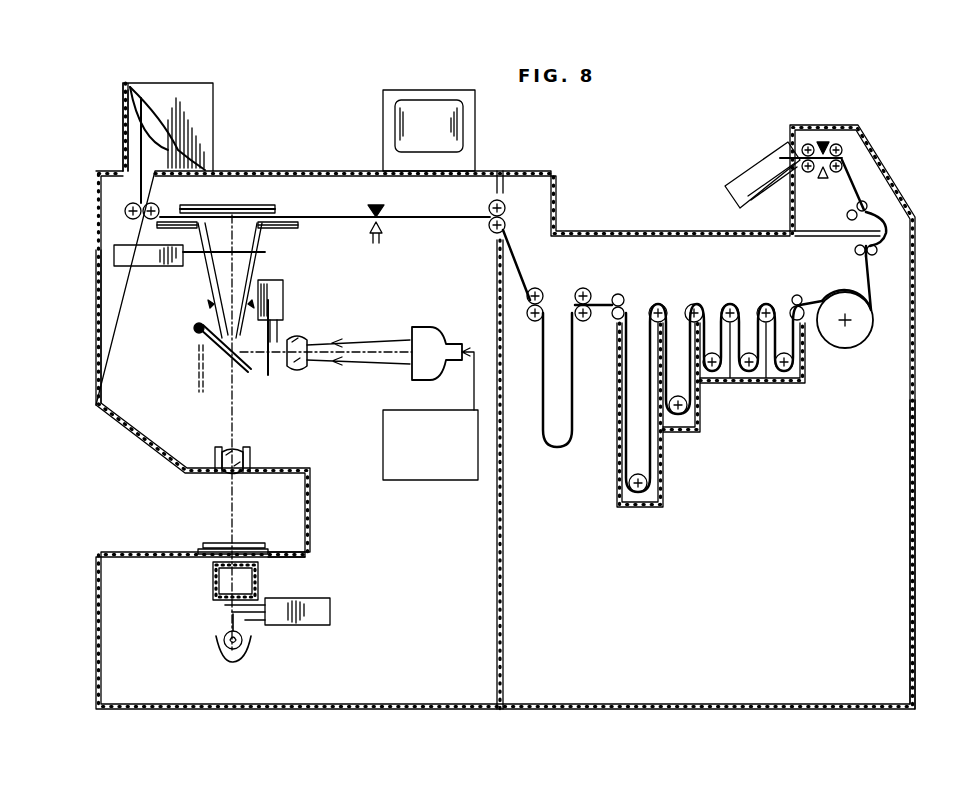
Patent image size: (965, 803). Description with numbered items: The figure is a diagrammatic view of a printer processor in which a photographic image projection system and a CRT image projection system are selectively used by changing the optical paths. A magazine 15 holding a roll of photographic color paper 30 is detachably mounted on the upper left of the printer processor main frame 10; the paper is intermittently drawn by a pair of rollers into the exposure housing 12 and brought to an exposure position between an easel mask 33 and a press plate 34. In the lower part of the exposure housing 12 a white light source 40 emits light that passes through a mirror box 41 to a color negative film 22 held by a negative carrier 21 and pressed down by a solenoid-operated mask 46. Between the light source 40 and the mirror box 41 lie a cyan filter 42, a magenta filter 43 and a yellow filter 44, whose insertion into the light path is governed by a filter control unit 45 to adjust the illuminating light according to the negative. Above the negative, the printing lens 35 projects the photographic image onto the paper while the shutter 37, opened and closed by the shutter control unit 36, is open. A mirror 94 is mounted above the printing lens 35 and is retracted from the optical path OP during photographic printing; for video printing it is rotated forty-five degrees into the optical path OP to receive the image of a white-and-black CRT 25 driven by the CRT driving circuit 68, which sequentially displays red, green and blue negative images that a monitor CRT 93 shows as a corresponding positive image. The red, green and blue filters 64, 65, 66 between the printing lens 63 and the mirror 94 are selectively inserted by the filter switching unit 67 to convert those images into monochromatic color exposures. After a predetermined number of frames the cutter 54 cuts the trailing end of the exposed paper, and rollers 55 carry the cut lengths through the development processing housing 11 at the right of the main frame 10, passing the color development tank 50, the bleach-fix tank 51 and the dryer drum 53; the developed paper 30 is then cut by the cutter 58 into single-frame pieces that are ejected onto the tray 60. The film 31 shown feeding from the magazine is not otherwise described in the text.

The printer processor main frame 10 is at (575, 709).
The development processing housing 11 is at (903, 530).
The exposure housing 12 is at (112, 311).
The magazine 15 is at (137, 110).
The film 31 is at (150, 132).
The press plate 34 is at (262, 205).
The photographic color paper 30 is at (420, 219).
The easel mask 33 is at (296, 228).
The shutter 37 is at (262, 252).
The shutter control unit 36 is at (152, 266).
The cutter 54 is at (376, 246).
The rollers 55 is at (505, 210).
The color development tank 50 is at (617, 495).
The bleach-fix tank 51 is at (690, 420).
The dryer drum 53 is at (848, 348).
The cutter 58 is at (827, 138).
The tray 60 is at (730, 202).
The monitor CRT 93 is at (446, 125).
The mirror 94 is at (198, 385).
The optical path OP is at (218, 325).
The filter switching unit 67 is at (283, 293).
The blue filter 66 is at (275, 325).
The green filter 65 is at (278, 336).
The red filter 64 is at (268, 372).
The printing lens 63 is at (305, 368).
The CRT 25 is at (432, 325).
The CRT driving circuit 68 is at (425, 480).
The printing lens 35 is at (222, 445).
The mask 46 is at (210, 541).
The color negative film 22 is at (198, 551).
The negative carrier 21 is at (272, 553).
The mirror box 41 is at (213, 582).
The yellow filter 44 is at (225, 607).
The magenta filter 43 is at (233, 614).
The cyan filter 42 is at (257, 622).
The filter control unit 45 is at (318, 605).
The white light source 40 is at (242, 648).